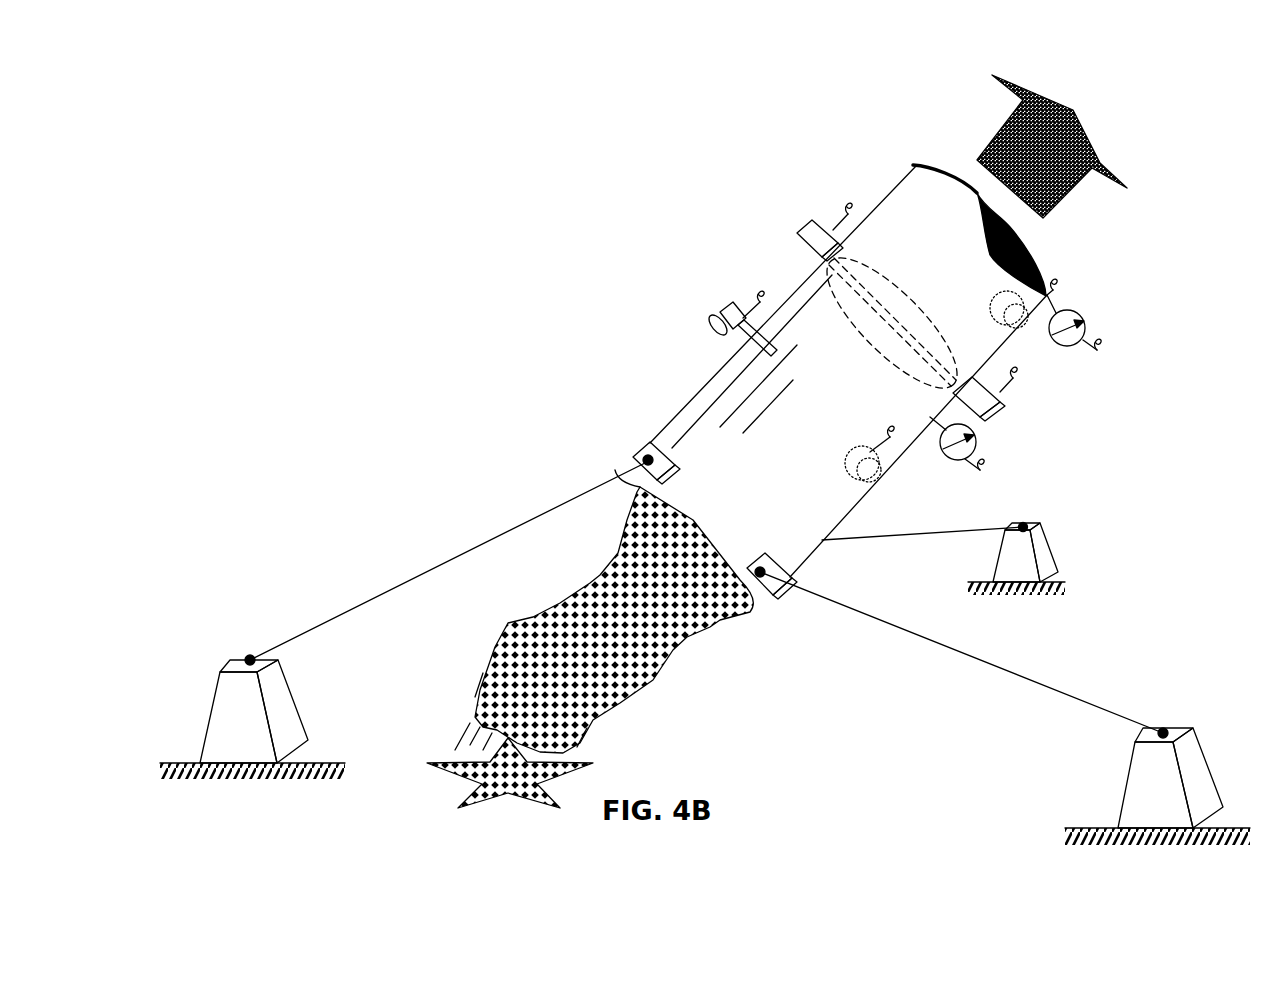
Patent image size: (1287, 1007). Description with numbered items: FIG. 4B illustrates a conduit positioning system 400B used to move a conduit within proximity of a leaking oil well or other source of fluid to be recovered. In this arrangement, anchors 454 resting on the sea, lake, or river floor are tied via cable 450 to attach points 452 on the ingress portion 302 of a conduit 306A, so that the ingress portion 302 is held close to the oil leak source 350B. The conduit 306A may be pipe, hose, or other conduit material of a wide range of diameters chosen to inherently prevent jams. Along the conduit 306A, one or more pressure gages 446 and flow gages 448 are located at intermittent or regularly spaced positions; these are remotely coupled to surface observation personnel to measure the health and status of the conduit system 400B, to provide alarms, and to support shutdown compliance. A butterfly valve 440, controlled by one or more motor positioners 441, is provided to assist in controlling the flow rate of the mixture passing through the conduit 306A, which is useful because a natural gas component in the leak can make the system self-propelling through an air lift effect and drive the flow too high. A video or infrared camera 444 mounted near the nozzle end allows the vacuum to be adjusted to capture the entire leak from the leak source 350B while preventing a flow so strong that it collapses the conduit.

The conduit positioning system 400B is at (1266, 51).
The ingress portion 302 is at (678, 422).
The conduit 306A is at (745, 375).
The butterfly valve 440 is at (921, 287).
The motor positioner 441 is at (821, 230).
The video or infrared camera 444 is at (726, 314).
The pressure gage 446 is at (1073, 312).
The flow gage 448 is at (1013, 322).
The cable 450 is at (438, 560).
The attach point 452 is at (618, 550).
The anchor 454 is at (262, 750).
The leak source 350B is at (440, 756).